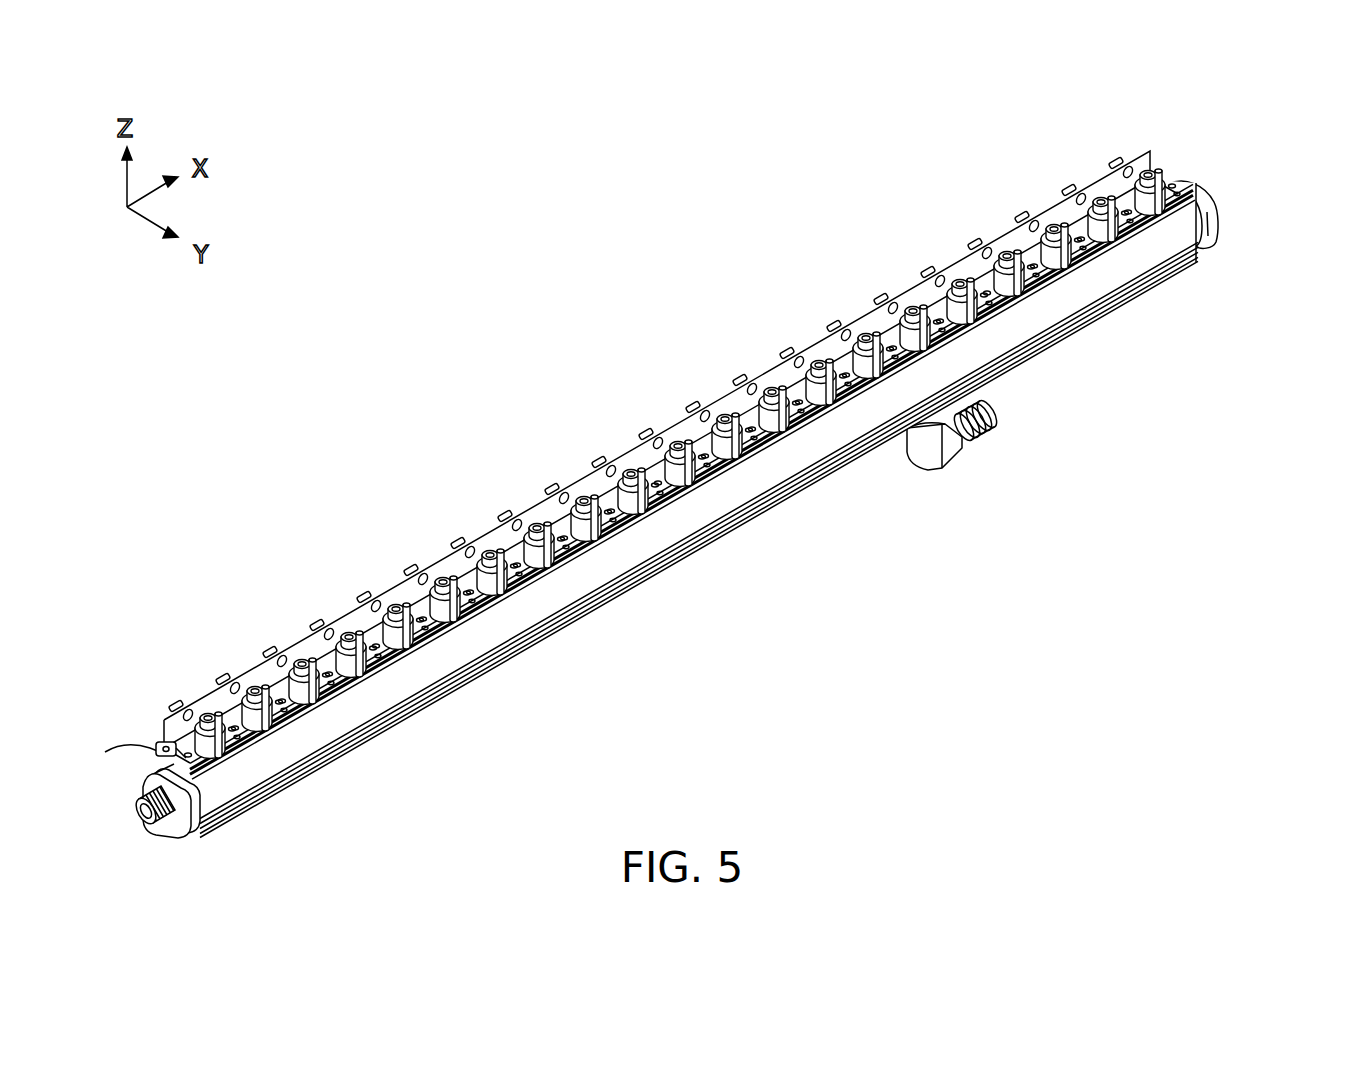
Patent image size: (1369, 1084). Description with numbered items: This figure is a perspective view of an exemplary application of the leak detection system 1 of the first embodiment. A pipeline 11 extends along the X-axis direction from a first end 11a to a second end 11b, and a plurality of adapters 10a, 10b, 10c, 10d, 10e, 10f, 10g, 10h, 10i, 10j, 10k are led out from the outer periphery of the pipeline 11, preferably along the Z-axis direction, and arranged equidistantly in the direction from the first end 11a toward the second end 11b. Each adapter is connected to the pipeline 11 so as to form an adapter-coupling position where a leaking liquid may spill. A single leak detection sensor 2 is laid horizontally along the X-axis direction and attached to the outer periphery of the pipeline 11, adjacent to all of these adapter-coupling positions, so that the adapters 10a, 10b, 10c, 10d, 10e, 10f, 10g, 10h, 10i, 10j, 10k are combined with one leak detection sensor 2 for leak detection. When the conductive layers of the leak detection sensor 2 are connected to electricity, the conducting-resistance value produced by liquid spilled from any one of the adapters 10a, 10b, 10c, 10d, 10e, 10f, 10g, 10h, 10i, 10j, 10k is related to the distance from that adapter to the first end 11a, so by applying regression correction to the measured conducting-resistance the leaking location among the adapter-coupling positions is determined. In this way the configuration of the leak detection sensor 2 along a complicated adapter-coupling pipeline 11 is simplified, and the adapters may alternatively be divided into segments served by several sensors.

The leak detection system 1 is at (1319, 152).
The leak detection sensor 2 is at (157, 744).
The first adapter 10a is at (207, 716).
The second adapter 10b is at (254, 689).
The third adapter 10c is at (301, 662).
The adapter 10d is at (348, 635).
The adapter 10e is at (395, 607).
The adapter 10f is at (442, 580).
The adapter 10g is at (489, 553).
The adapter 10h is at (536, 526).
The adapter 10i is at (583, 499).
The adapter 10j is at (630, 472).
The adapter 10k is at (677, 444).
The pipeline 11 is at (522, 620).
The first end 11a is at (177, 827).
The second end 11b is at (1210, 208).